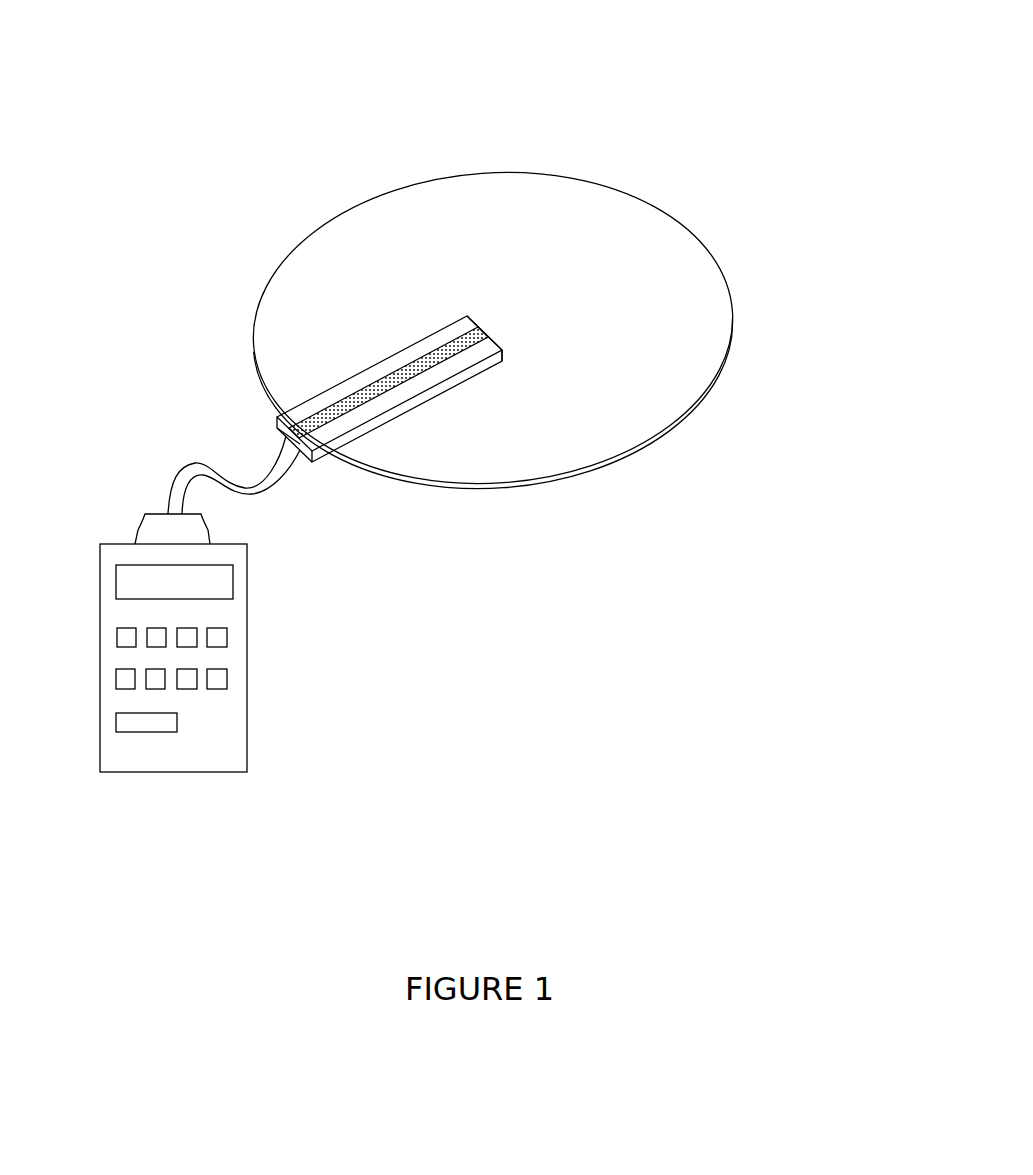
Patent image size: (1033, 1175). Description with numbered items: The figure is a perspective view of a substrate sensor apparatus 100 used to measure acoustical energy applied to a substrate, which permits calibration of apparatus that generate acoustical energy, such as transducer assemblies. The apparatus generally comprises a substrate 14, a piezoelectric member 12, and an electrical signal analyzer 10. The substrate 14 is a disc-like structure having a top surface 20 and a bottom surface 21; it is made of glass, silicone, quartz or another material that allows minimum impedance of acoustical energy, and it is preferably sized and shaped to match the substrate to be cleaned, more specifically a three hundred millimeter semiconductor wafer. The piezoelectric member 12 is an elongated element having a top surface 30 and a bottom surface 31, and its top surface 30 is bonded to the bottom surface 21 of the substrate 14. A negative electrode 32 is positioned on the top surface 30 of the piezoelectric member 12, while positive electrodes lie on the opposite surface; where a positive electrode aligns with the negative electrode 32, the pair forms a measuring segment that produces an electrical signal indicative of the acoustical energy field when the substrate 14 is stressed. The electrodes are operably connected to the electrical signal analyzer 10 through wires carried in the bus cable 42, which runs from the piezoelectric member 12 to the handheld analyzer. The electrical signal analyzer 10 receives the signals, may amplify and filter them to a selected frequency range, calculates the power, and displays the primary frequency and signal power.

The substrate sensor apparatus 100 is at (622, 97).
The electrical signal analyzer 10 is at (108, 587).
The piezoelectric member 12 is at (476, 357).
The substrate 14 is at (627, 188).
The top surface 20 is at (544, 362).
The bottom surface 21 is at (567, 478).
The top surface 30 is at (423, 348).
The bottom surface 31 is at (370, 423).
The negative electrode 32 is at (503, 351).
The bus cable 42 is at (192, 464).